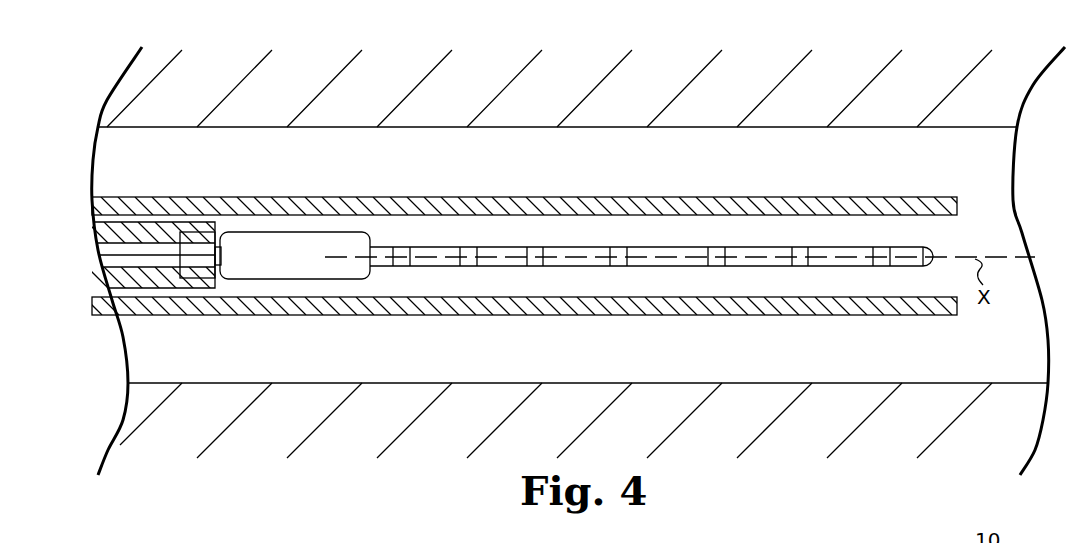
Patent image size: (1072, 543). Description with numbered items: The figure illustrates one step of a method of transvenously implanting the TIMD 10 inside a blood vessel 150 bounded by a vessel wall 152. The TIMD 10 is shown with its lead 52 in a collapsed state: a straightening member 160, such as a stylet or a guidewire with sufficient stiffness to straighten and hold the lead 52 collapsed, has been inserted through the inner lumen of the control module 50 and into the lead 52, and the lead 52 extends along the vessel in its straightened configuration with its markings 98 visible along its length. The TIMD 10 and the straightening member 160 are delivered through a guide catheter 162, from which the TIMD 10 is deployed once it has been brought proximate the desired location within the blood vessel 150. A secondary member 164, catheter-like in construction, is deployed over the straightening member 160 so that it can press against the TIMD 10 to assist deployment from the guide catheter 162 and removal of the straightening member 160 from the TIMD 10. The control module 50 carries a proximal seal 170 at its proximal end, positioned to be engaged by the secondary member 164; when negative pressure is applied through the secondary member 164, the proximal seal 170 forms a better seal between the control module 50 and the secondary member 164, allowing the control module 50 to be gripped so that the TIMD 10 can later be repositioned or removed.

The TIMD 10 is at (627, 223).
The control module 50 is at (308, 228).
The lead 52 is at (538, 240).
The segment marking on catheter 98 is at (618, 263).
The blood vessel 150 is at (813, 120).
The vessel wall 152 is at (875, 135).
The straightening member 160 is at (153, 250).
The guide catheter 162 is at (279, 193).
The secondary member 164 is at (176, 293).
The proximal seal 170 is at (219, 238).